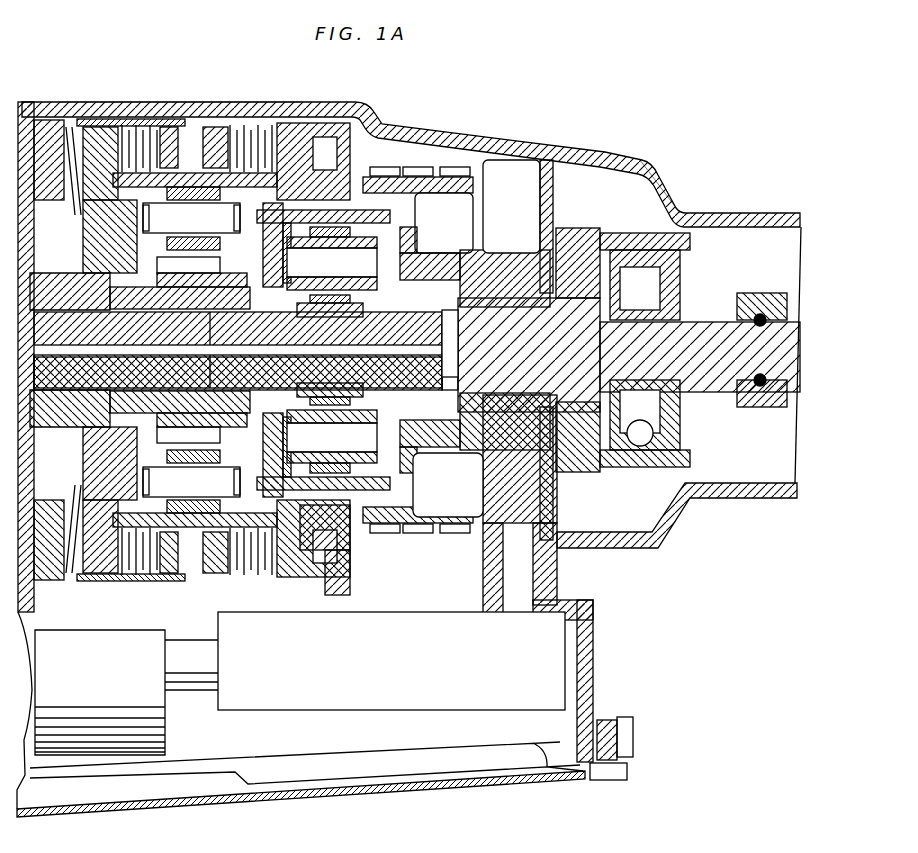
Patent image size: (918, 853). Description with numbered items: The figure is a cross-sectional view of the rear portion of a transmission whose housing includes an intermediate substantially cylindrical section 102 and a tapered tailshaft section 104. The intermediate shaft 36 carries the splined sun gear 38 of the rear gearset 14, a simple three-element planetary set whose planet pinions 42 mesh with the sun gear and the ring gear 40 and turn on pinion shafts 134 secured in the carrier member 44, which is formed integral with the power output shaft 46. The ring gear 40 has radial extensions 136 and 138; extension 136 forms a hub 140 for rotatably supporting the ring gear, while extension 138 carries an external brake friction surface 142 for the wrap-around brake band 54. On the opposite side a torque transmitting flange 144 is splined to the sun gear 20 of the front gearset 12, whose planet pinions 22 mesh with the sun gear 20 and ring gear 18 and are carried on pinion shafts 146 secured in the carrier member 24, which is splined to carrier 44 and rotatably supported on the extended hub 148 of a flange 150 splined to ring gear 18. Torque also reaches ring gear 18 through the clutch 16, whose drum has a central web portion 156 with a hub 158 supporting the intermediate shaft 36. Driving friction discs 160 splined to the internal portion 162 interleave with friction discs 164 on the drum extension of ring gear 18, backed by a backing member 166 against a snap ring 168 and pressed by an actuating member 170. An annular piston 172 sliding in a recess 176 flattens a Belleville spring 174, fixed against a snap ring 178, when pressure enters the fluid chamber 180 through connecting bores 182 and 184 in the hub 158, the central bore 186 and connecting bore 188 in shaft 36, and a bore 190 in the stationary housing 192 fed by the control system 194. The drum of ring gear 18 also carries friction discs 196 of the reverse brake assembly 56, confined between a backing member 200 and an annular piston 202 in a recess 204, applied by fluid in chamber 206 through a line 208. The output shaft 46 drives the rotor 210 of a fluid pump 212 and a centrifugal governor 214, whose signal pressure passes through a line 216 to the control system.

The front gearset 12 is at (103, 248).
The rear gearset 14 is at (430, 135).
The clutch 16 is at (178, 119).
The ring gear 18 is at (195, 174).
The sun gear 20 is at (202, 270).
The planet pinions 22 is at (222, 193).
The carrier member 24 is at (130, 278).
The intermediate shaft 36 is at (238, 373).
The sun gear 38 is at (335, 312).
The ring gear 40 is at (362, 215).
The planet pinions 42 is at (415, 270).
The carrier member 44 is at (280, 225).
The power output shaft 46 is at (672, 362).
The brake band 54 is at (430, 178).
The reverse brake assembly 56 is at (262, 122).
The intermediate cylindrical section 102 is at (135, 103).
The tailshaft section 104 is at (668, 198).
The pinion shafts 134 is at (332, 272).
The radial extension 136 is at (450, 229).
The radial extension 138 is at (444, 223).
The hub 140 is at (475, 280).
The brake friction surface 142 is at (490, 178).
The torque transmitting flange 144 is at (262, 258).
The pinion shafts 146 is at (191, 226).
The extended hub 148 is at (170, 325).
The flange 150 is at (130, 222).
The central web portion 156 is at (50, 152).
The hub 158 is at (136, 349).
The driving friction discs 160 is at (135, 585).
The internal portion 162 is at (120, 580).
The friction discs 164 is at (140, 512).
The backing member 166 is at (140, 580).
The snap ring 168 is at (168, 580).
The actuating member 170 is at (95, 475).
The annular piston 172 is at (40, 470).
The Belleville spring 174 is at (55, 585).
The recess 176 is at (100, 372).
The snap ring 178 is at (95, 580).
The fluid chamber 180 is at (40, 450).
The connecting bore 182 is at (70, 315).
The connecting bore 184 is at (47, 372).
The central bore 186 is at (210, 372).
The connecting bore 188 is at (500, 388).
The bore 190 is at (495, 440).
The transmission housing 192 is at (495, 510).
The fluid pressure control system 194 is at (178, 700).
The friction discs 196 is at (274, 530).
The backing member 200 is at (237, 612).
The annular piston 202 is at (355, 540).
The recess 204 is at (350, 565).
The chamber 206 is at (300, 612).
The line 208 is at (340, 612).
The rotor 210 is at (560, 312).
The fluid pump 212 is at (546, 267).
The centrifugal governor 214 is at (691, 282).
The line 216 is at (640, 515).